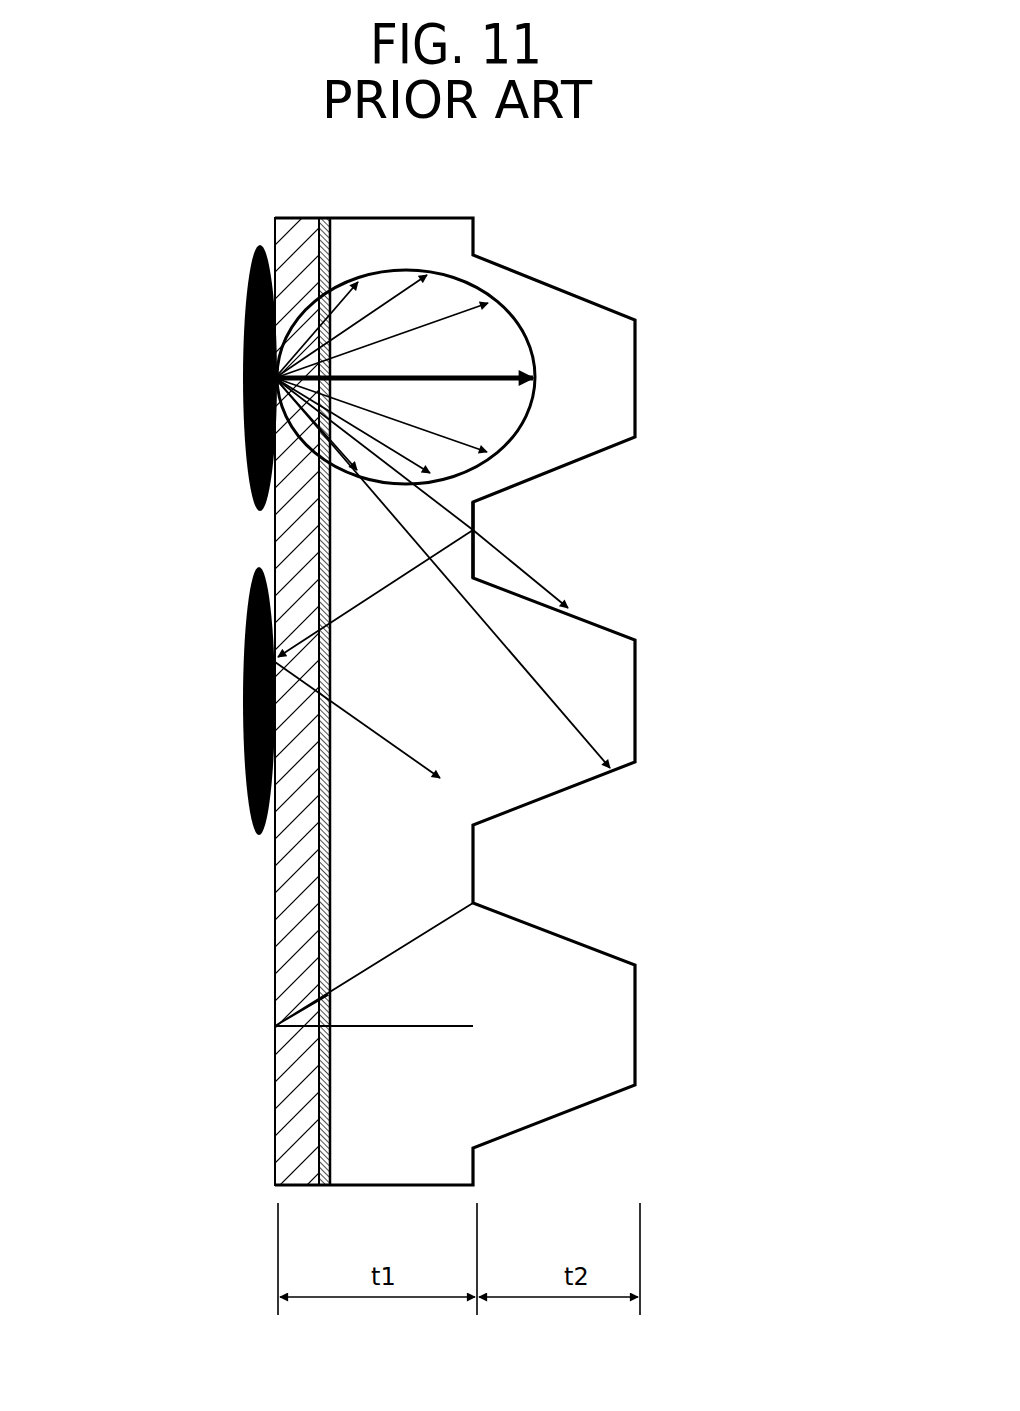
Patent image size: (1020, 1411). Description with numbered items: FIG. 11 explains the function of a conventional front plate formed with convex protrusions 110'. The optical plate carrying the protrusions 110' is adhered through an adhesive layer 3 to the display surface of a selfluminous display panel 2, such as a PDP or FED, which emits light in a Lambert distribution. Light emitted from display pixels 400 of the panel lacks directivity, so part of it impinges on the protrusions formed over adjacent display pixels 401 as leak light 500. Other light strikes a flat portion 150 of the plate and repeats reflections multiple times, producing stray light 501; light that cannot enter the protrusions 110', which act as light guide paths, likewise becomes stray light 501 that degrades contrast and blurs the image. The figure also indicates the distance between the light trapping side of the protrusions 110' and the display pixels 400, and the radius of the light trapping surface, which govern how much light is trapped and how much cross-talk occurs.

The selfluminous display panel 2 is at (291, 218).
The adhesive layer 3 is at (327, 218).
The protrusions 110' is at (473, 701).
The flat portion 150 is at (478, 512).
The display pixels 400 is at (242, 381).
The adjacent display pixels 401 is at (242, 693).
The leak light 500 is at (555, 706).
The stray light 501 is at (365, 602).